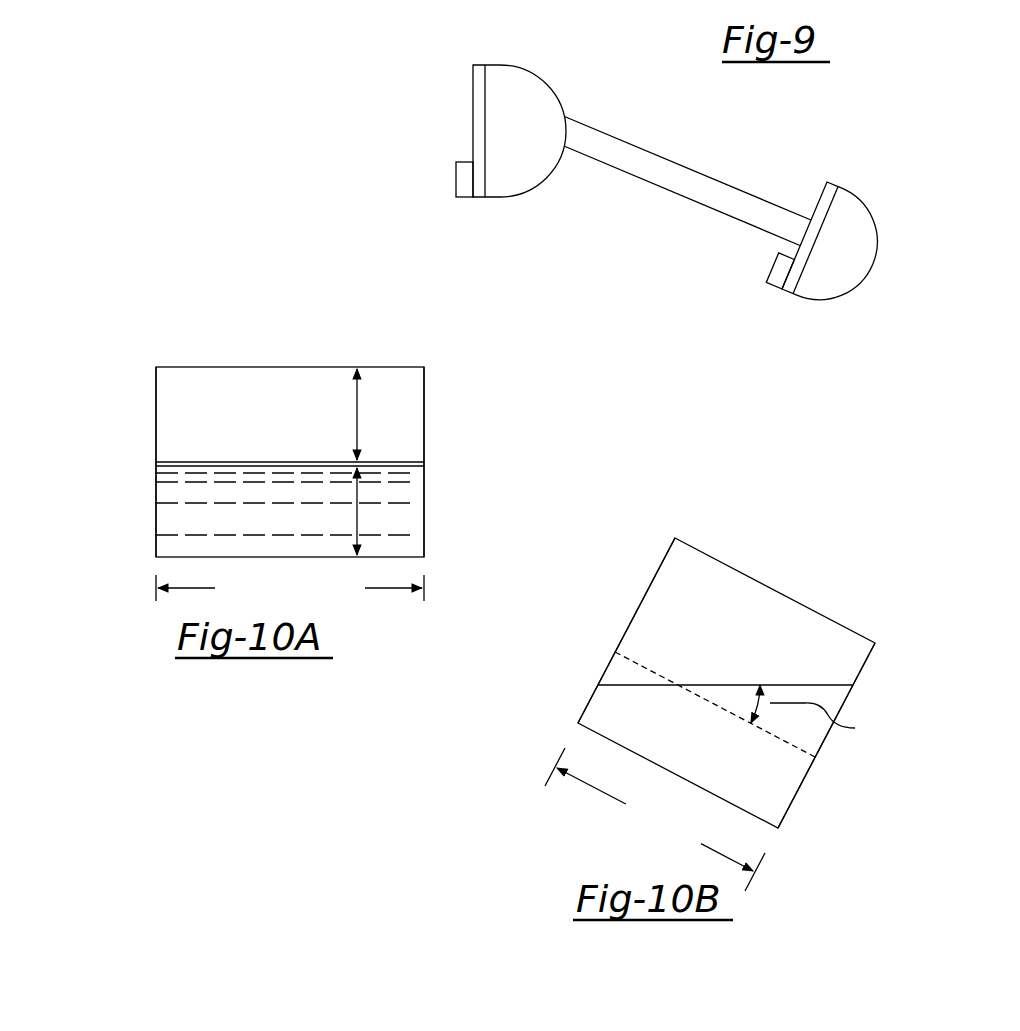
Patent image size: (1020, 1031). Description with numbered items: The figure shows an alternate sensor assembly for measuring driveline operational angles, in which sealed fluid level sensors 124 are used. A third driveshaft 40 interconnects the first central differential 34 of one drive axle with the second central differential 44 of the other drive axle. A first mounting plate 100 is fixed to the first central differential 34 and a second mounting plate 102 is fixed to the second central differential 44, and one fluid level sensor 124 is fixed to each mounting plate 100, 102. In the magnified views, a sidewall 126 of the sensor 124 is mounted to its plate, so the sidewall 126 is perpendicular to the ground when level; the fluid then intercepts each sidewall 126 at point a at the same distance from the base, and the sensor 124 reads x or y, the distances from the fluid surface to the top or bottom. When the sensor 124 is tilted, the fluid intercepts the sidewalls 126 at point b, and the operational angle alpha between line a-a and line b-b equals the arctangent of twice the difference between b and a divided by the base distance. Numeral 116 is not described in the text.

In FIG. 9, the first central differential 34 is at (497, 111).
In FIG. 9, the third driveshaft 40 is at (637, 160).
In FIG. 9, the second central differential 44 is at (840, 202).
In FIG. 9, the first mounting plate 100 is at (478, 125).
In FIG. 9, the second mounting plate 102 is at (827, 197).
In FIG. 9, the component 116 is at (264, 13).
In FIG. 9, the fluid level sensor 124 is at (463, 175).
In FIG. 10A, the fluid level sensor 124 is at (142, 344).
In FIG. 10B, the fluid level sensor 124 is at (905, 623).
In FIG. 10A, the sidewall 126 is at (156, 393).
In FIG. 10B, the sidewall 126 is at (653, 580).